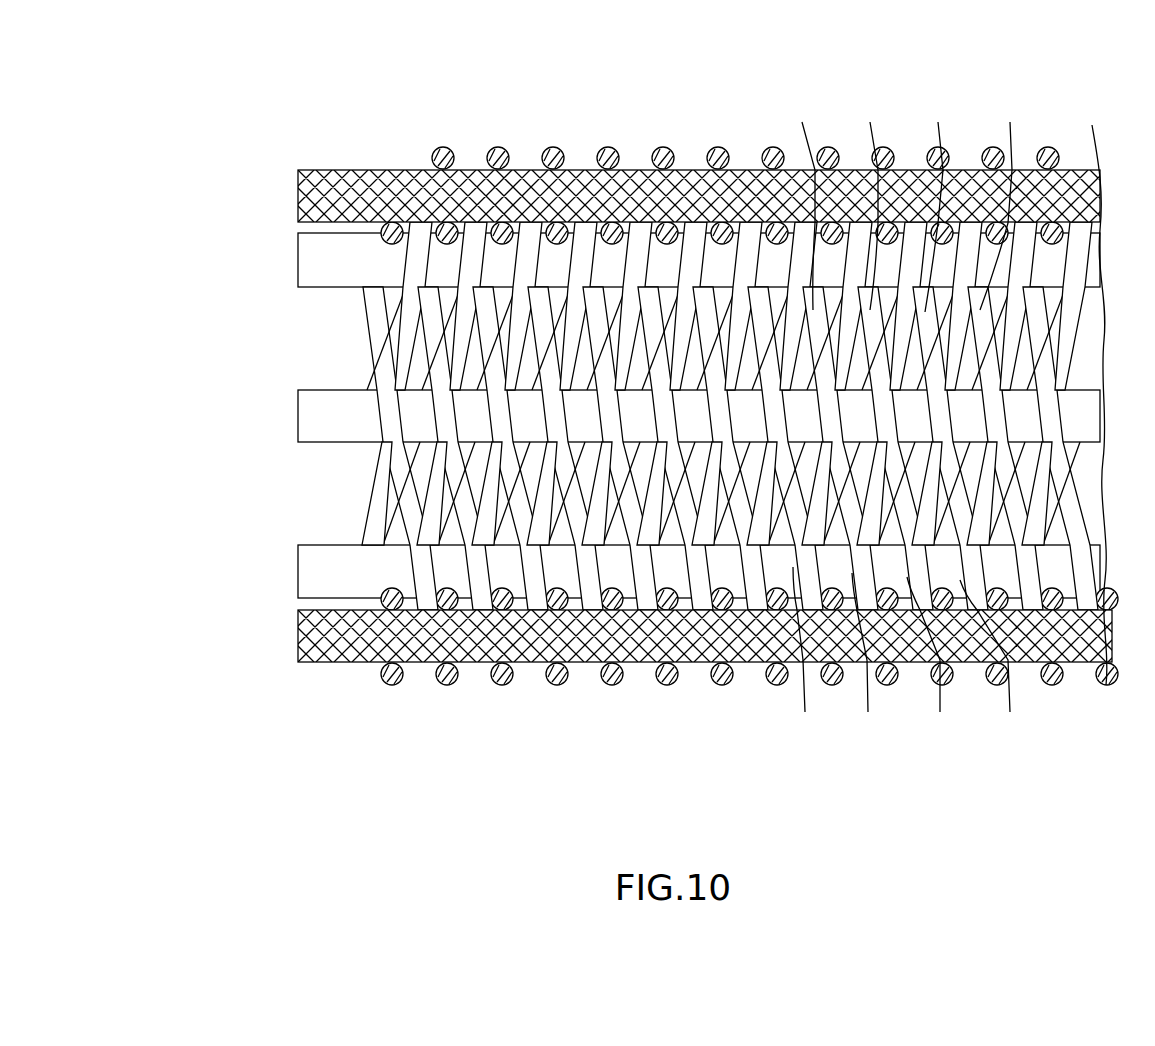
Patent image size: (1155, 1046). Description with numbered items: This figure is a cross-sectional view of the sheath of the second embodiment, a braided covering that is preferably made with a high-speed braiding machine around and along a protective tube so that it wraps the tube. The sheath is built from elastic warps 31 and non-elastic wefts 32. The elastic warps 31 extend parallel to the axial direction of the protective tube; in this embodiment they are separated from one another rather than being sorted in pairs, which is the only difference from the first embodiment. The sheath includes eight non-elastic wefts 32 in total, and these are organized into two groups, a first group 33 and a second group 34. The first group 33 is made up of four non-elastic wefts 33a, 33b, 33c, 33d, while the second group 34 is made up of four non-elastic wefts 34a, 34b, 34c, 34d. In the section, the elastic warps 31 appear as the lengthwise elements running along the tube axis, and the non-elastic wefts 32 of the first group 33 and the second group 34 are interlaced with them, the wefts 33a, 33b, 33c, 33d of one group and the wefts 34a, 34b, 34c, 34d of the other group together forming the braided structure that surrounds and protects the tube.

The elastic warps 31 is at (290, 415).
The non-elastic wefts 32 is at (358, 341).
The first group 33 is at (772, 734).
The non-elastic weft 33a is at (797, 654).
The non-elastic weft 33b is at (870, 657).
The non-elastic weft 33c is at (936, 659).
The non-elastic weft 33d is at (998, 660).
The second group 34 is at (1040, 86).
The non-elastic weft 34a is at (792, 200).
The non-elastic weft 34b is at (865, 200).
The non-elastic weft 34c is at (938, 201).
The non-elastic weft 34d is at (1007, 200).